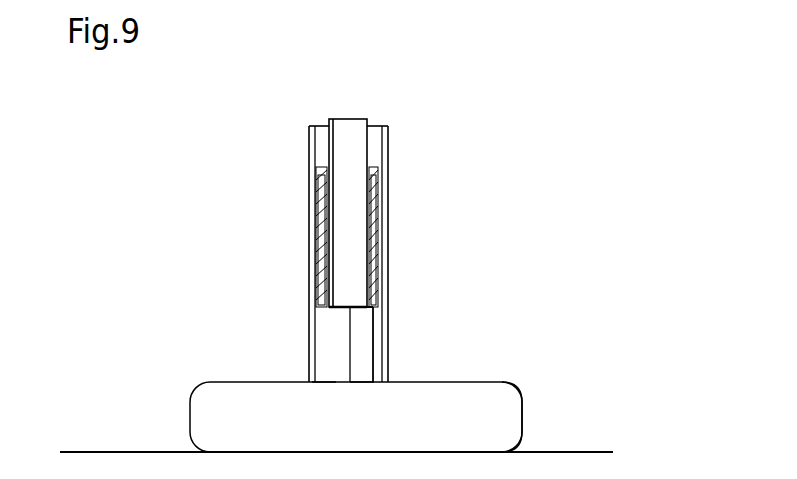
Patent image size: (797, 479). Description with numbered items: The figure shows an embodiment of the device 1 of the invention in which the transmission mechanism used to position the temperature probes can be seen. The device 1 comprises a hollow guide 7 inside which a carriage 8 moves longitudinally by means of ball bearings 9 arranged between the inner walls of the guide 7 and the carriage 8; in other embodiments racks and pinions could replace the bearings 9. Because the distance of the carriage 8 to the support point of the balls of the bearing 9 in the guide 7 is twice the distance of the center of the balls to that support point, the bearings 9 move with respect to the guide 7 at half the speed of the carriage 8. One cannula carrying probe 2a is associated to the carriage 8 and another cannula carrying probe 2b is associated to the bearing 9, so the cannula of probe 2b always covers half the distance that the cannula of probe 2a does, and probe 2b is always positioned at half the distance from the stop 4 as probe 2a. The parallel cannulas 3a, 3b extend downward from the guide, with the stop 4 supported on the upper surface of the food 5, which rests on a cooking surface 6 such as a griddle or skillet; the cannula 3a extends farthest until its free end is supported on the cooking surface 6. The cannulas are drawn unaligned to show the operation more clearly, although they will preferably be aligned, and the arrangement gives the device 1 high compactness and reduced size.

The device 1 is at (442, 110).
The probe 2a is at (323, 386).
The probe 2b is at (367, 386).
The cannula 3a is at (350, 333).
The cannula 3b is at (375, 330).
The stop 4 is at (277, 380).
The food 5 is at (522, 402).
The cooking surface 6 is at (165, 450).
The hollow guide 7 is at (313, 150).
The carriage 8 is at (357, 157).
The ball bearings 9 is at (318, 240).